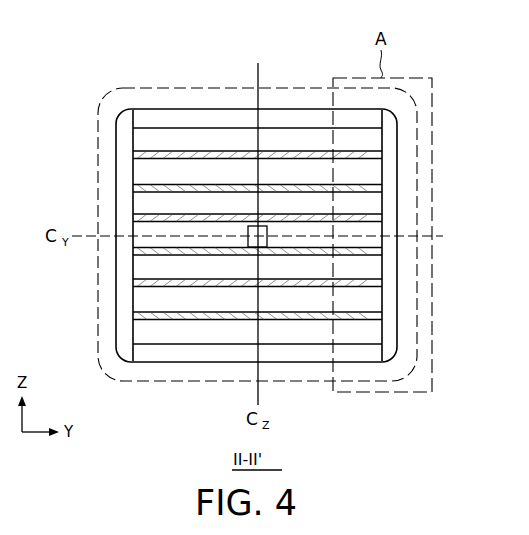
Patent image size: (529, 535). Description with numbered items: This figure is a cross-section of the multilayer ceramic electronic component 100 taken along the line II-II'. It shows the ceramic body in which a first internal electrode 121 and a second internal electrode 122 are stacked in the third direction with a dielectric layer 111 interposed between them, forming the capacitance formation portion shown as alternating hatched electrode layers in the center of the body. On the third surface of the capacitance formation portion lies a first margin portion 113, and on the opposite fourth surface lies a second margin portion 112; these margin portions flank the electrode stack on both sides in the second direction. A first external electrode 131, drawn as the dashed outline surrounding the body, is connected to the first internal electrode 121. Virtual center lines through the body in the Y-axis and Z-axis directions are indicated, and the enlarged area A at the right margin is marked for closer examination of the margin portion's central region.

The multilayer ceramic electronic component 100 is at (68, 29).
The dielectric layer 111 is at (143, 170).
The second margin portion 112 is at (123, 300).
The first margin portion 113 is at (389, 296).
The first internal electrode 121 is at (158, 153).
The second internal electrode 122 is at (158, 187).
The first external electrode 131 is at (222, 96).